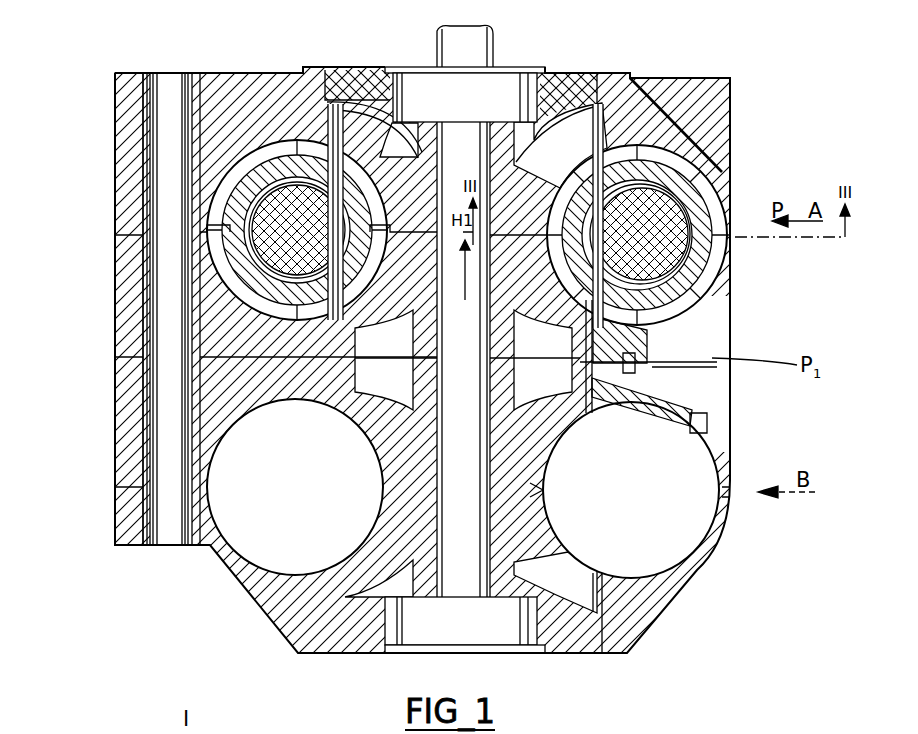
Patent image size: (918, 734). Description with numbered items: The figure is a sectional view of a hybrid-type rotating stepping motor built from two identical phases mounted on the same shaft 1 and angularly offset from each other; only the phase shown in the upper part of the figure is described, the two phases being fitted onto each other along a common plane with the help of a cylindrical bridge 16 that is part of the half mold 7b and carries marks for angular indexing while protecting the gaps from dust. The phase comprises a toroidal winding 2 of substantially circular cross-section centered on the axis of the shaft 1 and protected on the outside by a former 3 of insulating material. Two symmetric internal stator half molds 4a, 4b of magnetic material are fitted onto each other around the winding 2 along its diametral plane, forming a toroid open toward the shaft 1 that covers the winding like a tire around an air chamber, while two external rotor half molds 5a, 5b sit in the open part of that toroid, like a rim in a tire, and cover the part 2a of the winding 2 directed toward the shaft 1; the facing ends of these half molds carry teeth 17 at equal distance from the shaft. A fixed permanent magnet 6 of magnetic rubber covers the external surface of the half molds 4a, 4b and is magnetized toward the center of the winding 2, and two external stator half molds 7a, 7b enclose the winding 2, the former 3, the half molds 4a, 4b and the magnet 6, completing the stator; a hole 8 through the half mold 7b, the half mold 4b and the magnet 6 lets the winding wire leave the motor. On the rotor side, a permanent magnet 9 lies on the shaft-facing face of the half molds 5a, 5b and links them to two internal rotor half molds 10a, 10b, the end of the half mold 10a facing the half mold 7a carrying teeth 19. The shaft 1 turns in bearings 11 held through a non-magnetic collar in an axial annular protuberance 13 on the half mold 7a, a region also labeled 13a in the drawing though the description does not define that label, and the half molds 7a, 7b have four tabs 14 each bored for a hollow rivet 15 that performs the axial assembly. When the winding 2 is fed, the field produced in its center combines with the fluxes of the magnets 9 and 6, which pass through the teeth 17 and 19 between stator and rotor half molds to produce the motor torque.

The shaft 1 is at (440, 50).
The toroidal winding 2 is at (712, 172).
The part of the winding directed towards the shaft 2a is at (469, 283).
The former 3 is at (700, 145).
The internal stator half mold 4a is at (722, 200).
The internal stator half mold 4b is at (718, 250).
The external rotor half mold 5a is at (672, 110).
The external rotor half mold 5b is at (467, 360).
The fixed permanent magnet 6 is at (740, 235).
The external stator half mold 7a is at (700, 135).
The external stator half mold 7b is at (690, 322).
The hole 8 is at (700, 288).
The permanent magnet 9 is at (550, 72).
The internal rotor half mold 10a is at (530, 140).
The internal rotor half mold 10b is at (473, 533).
The bearings 11 is at (405, 78).
The axial annular protuberance 13 is at (626, 72).
The housing insert 13a is at (590, 165).
The tabs 14 is at (203, 103).
The hollow rivet 15 is at (150, 73).
The cylindrical bridge 16 is at (690, 378).
The teeth 17 is at (332, 170).
The teeth 19 is at (615, 592).